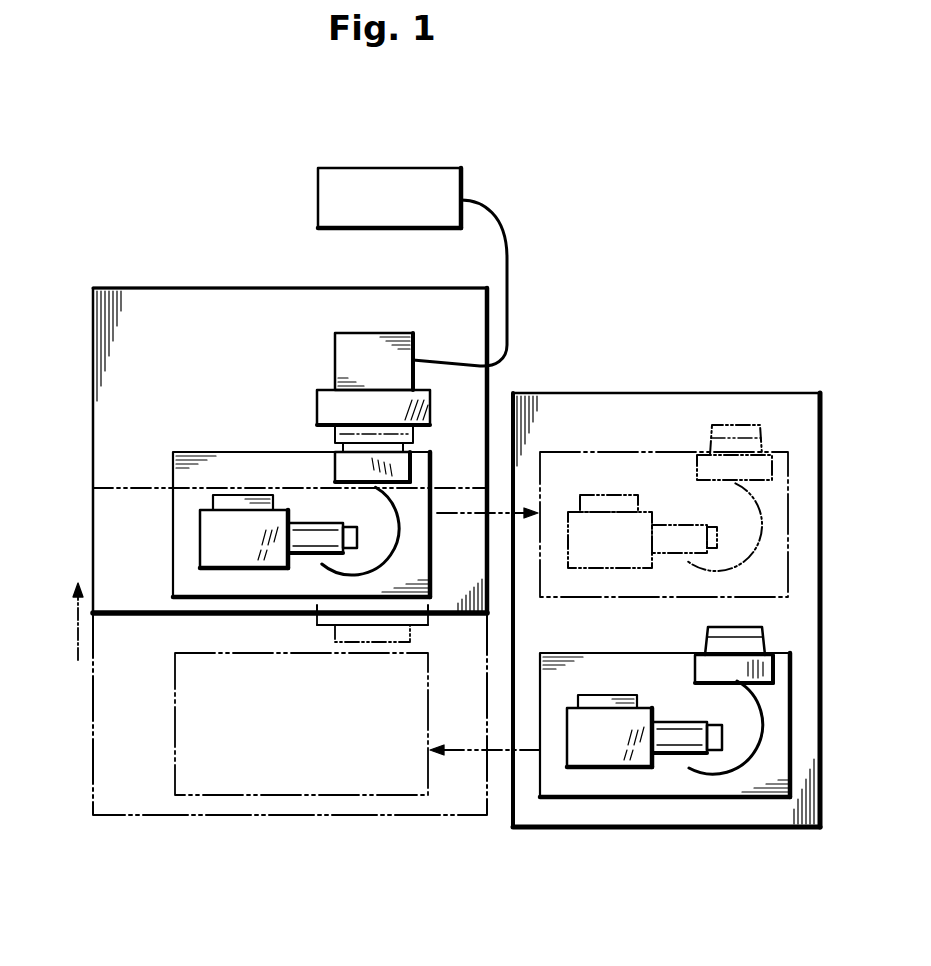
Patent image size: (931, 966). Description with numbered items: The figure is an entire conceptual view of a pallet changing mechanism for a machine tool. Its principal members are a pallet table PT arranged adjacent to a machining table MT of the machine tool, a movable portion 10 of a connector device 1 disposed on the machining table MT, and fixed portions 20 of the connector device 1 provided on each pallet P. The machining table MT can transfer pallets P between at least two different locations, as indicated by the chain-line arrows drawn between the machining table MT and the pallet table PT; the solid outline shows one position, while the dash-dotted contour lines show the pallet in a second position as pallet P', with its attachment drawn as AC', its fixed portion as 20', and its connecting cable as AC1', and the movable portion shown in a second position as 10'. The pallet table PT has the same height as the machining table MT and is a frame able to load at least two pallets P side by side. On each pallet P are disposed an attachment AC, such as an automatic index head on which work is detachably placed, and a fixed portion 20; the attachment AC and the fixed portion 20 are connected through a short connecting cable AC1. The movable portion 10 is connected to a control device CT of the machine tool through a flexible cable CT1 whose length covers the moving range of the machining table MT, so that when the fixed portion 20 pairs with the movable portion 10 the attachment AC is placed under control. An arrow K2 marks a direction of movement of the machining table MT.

The control device CT is at (444, 168).
The flexible cable CT1 is at (507, 290).
The machining table MT is at (100, 348).
The movable portion 10 is at (395, 346).
The connector device 1 is at (448, 395).
The fixed portion 20 is at (600, 556).
The pallet P is at (460, 669).
The attachment AC is at (461, 590).
The connecting cable AC1 is at (562, 685).
The direction of pallet movement K2 is at (70, 608).
The spindle head position (phantom) 10' is at (396, 649).
The pallet position (phantom) P' is at (481, 654).
The pallet table PT is at (820, 728).
The camera (phantom) AC' is at (640, 568).
The holder (phantom) 20' is at (788, 452).
The camera cable (phantom) AC1' is at (784, 527).